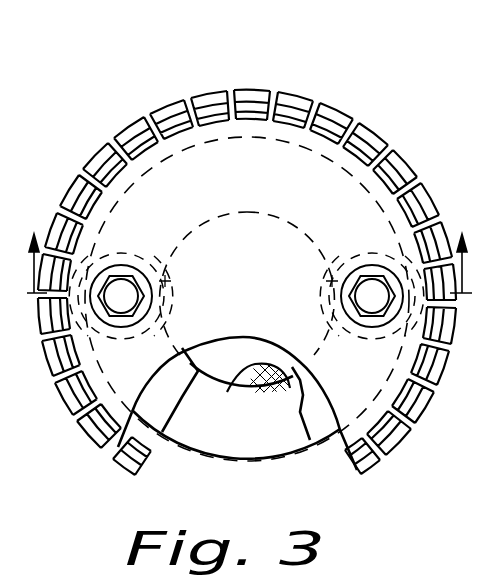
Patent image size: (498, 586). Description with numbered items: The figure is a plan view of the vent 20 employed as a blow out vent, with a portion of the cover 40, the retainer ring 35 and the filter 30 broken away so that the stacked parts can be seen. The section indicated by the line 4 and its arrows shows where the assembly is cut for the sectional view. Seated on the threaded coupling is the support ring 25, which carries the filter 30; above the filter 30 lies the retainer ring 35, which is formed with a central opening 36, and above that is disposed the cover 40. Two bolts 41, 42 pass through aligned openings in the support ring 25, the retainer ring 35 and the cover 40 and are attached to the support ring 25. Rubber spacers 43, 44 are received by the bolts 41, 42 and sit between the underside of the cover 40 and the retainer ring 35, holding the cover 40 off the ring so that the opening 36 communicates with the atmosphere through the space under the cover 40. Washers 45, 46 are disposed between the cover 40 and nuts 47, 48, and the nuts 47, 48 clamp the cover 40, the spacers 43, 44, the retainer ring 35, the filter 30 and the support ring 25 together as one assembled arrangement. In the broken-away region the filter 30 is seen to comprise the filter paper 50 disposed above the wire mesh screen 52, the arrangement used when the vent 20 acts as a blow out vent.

The vent 20 is at (99, 110).
The cover 40 is at (252, 128).
The section line 4- 4 is at (249, 250).
The bolt 41 is at (124, 252).
The bolt 42 is at (378, 252).
The rubber spacer 43 is at (157, 248).
The rubber spacer 44 is at (343, 268).
The washer 45 is at (171, 281).
The washer 46 is at (326, 281).
The nut 47 is at (121, 315).
The nut 48 is at (372, 316).
The support ring 25 is at (281, 438).
The retainer ring 35 is at (148, 410).
The central opening 36 is at (188, 349).
The filter paper 50 is at (213, 366).
The wire mesh screen 52 is at (270, 362).
The filter 30 is at (242, 364).